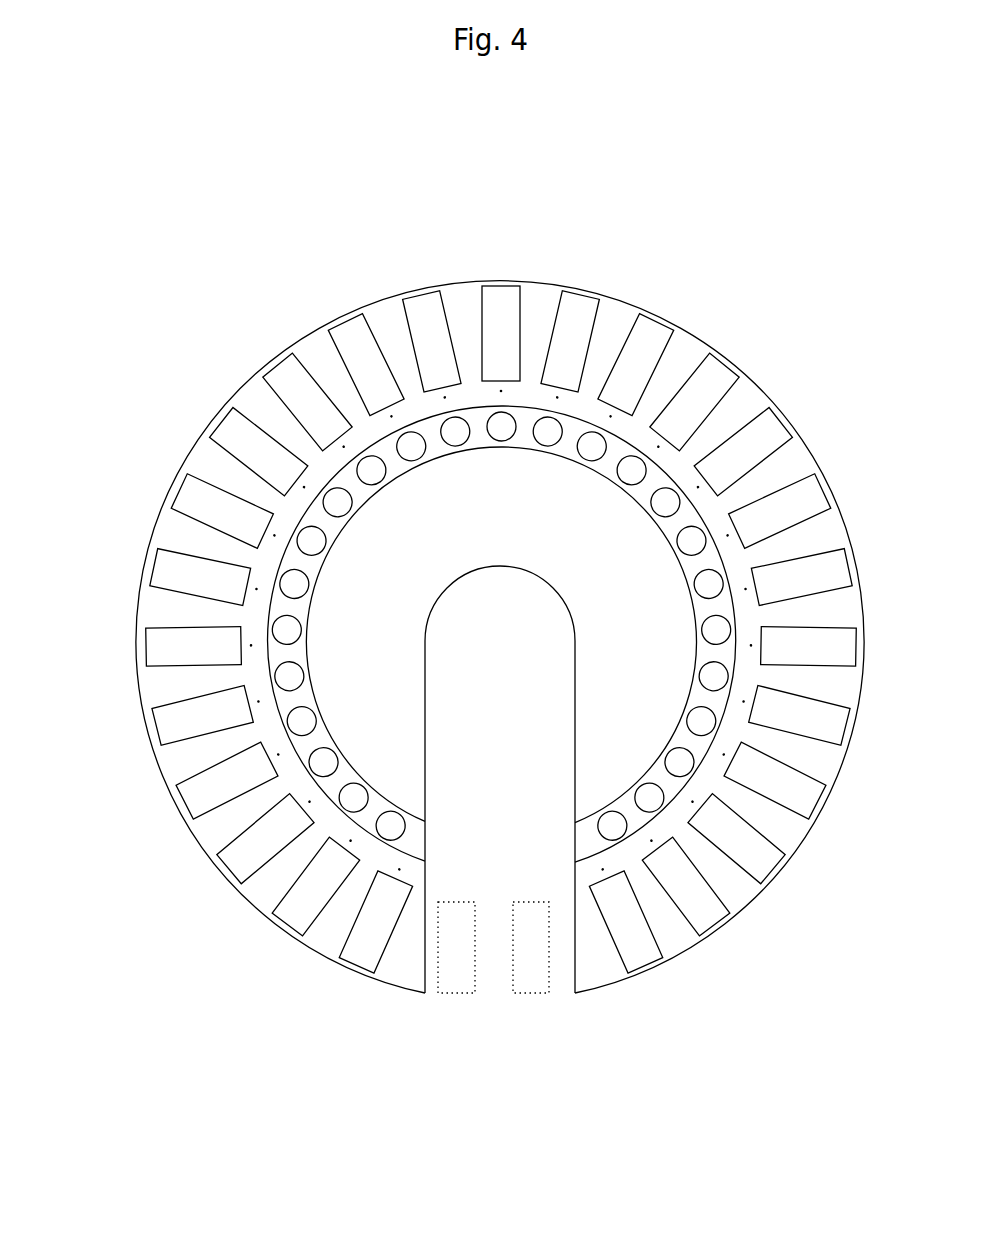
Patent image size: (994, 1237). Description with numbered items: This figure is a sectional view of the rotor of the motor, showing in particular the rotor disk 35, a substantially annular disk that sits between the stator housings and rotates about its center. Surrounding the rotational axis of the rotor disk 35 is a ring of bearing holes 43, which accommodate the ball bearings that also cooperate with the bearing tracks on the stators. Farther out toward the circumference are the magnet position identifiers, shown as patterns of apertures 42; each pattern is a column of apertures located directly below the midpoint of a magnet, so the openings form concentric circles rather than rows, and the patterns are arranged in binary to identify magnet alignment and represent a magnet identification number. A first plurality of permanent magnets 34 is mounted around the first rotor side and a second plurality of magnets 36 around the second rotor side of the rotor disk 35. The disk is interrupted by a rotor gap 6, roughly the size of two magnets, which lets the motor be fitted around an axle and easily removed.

The rotor gap 6 is at (495, 992).
The first plurality of permanent magnets 34 is at (457, 612).
The rotor disk 35 is at (188, 837).
The second plurality of magnets 36 is at (593, 292).
The patterns of apertures 42 is at (262, 527).
The bearing holes 43 is at (403, 430).